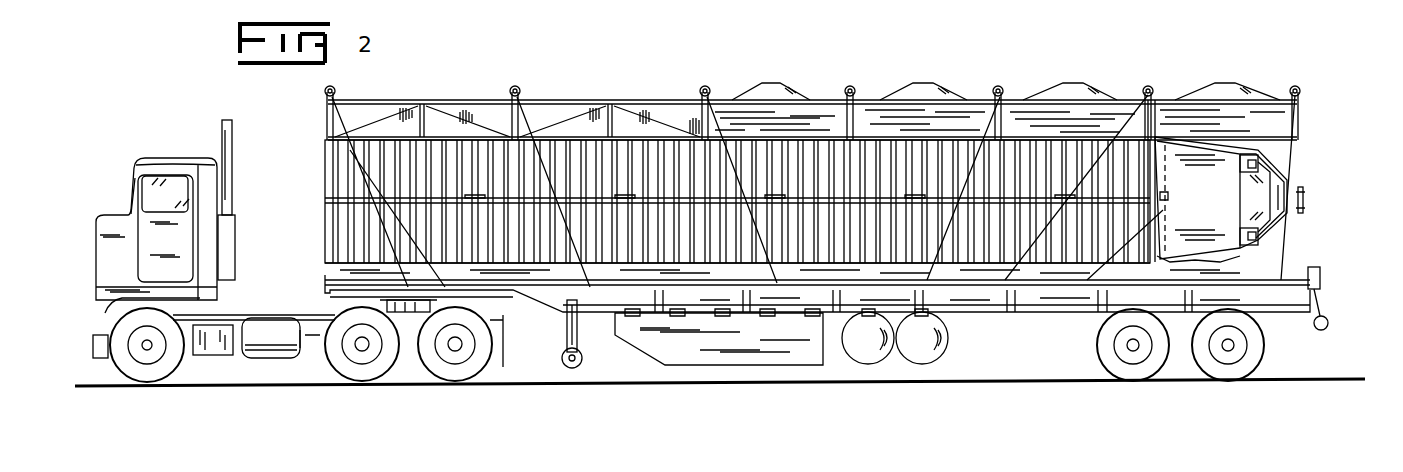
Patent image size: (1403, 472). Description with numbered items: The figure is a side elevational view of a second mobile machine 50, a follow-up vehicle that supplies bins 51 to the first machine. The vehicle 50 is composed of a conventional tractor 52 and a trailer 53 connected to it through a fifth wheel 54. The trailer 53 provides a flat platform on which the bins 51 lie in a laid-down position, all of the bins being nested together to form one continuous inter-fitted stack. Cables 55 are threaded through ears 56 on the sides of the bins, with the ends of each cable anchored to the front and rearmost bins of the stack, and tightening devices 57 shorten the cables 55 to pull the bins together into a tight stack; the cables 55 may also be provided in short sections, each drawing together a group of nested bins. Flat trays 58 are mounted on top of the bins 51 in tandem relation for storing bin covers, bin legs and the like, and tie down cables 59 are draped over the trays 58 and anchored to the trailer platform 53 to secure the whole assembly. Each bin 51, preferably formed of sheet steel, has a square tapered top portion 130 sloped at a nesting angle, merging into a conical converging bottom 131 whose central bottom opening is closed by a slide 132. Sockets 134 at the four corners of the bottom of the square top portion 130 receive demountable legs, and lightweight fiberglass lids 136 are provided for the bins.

The second mobile machine 50 is at (846, 213).
The bins 51 is at (1145, 152).
The tractor 52 is at (158, 158).
The trailer 53 is at (1050, 278).
The fifth wheel 54 is at (408, 320).
The cables 55 is at (578, 195).
The ears 56 is at (1180, 153).
The tightening devices 57 is at (622, 198).
The flat trays 58 is at (415, 98).
The tie down cables 59 is at (1095, 157).
The square tapered top portion 130 is at (1261, 196).
The conical converging bottom 131 is at (1288, 168).
The slide 132 is at (1305, 202).
The sockets 134 is at (1277, 160).
The lids 136 is at (803, 90).